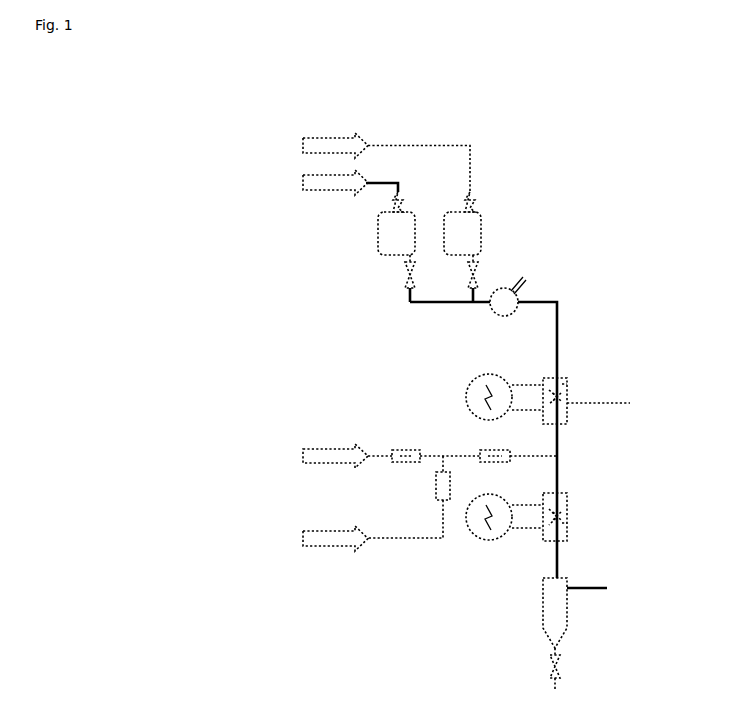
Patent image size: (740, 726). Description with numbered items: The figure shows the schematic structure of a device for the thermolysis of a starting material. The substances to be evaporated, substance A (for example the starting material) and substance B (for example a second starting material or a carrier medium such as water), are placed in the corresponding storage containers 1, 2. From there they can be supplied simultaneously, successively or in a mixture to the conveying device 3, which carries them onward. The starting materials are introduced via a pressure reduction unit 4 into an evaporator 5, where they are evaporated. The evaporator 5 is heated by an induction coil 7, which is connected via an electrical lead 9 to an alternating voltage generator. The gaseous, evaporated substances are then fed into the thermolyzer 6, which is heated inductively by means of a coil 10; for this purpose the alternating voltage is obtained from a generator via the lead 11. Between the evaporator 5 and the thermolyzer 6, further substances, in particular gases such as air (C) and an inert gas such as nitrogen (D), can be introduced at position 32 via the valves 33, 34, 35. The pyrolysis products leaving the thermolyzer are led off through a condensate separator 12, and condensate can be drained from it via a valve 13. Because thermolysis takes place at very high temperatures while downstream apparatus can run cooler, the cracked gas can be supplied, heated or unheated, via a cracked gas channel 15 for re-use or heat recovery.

The storage container 1 is at (396, 247).
The storage container 2 is at (462, 247).
The conveying device 3 is at (508, 294).
The pressure reduction unit 4 is at (559, 374).
The evaporator 5 is at (568, 390).
The thermolyzer 6 is at (568, 515).
The induction coil 7 is at (605, 404).
The electrical lead 9 is at (525, 385).
The coil 10 is at (568, 523).
The lead 11 is at (533, 505).
The condensate separator 12 is at (543, 618).
The valve 13 is at (555, 683).
The cracked gas channel 15 is at (586, 574).
The position 32 is at (549, 455).
The valve 33 is at (405, 442).
The valve 34 is at (409, 497).
The valve 35 is at (494, 443).